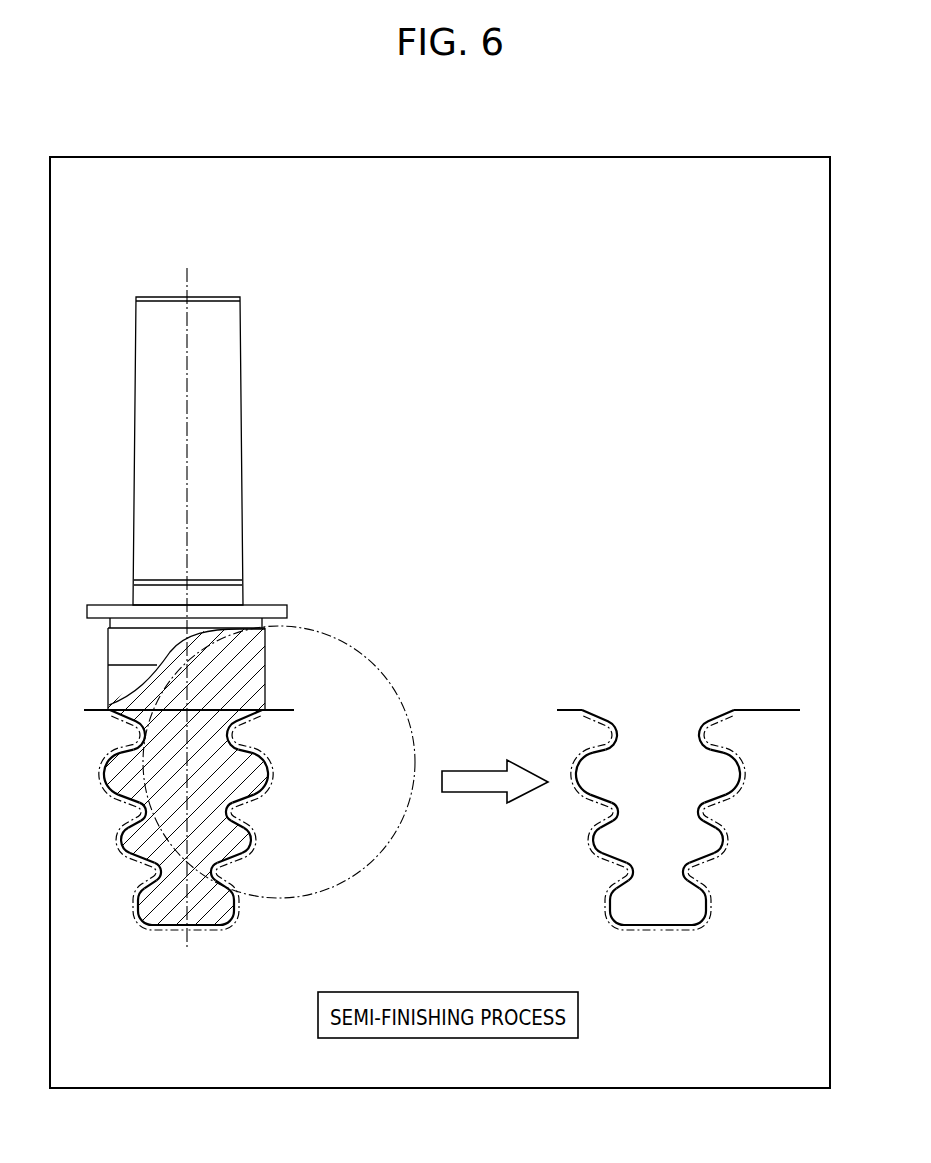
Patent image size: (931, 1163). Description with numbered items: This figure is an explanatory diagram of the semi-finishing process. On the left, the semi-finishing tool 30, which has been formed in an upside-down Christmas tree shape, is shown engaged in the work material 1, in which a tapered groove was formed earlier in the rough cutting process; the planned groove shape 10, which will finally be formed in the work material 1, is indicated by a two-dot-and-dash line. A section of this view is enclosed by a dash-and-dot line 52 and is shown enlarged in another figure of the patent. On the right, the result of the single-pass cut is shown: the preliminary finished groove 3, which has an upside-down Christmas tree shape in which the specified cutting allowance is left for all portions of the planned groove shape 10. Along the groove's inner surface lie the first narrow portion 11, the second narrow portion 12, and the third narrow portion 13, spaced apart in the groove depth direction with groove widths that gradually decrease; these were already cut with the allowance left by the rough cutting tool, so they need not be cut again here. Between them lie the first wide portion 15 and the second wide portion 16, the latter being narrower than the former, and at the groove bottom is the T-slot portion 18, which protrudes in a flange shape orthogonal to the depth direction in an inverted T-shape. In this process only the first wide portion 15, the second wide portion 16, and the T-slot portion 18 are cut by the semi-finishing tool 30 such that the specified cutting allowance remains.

The work material 1 is at (268, 710).
The preliminary finished groove 3 is at (669, 711).
The planned groove shape 10 is at (136, 921).
The first narrow portion 11 is at (241, 733).
The second narrow portion 12 is at (231, 807).
The third narrow portion 13 is at (214, 867).
The first wide portion 15 is at (273, 773).
The second wide portion 16 is at (258, 837).
The T-slot portion 18 is at (229, 924).
The semi-finishing tool 30 is at (226, 281).
The dash-and-dot line 52 is at (312, 893).